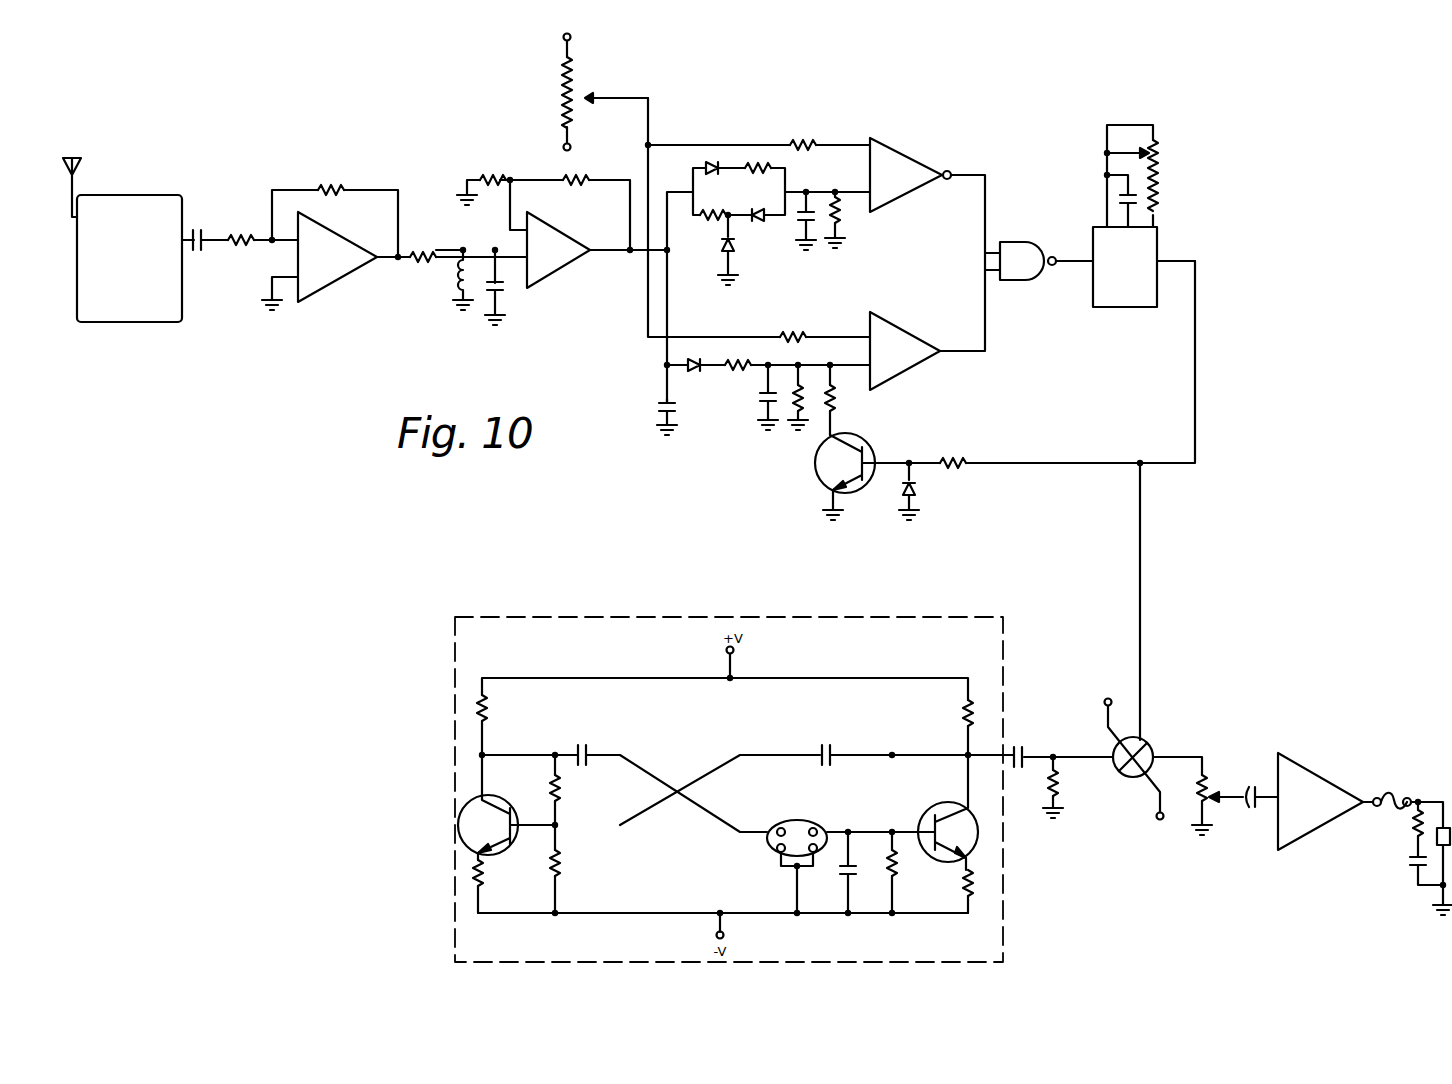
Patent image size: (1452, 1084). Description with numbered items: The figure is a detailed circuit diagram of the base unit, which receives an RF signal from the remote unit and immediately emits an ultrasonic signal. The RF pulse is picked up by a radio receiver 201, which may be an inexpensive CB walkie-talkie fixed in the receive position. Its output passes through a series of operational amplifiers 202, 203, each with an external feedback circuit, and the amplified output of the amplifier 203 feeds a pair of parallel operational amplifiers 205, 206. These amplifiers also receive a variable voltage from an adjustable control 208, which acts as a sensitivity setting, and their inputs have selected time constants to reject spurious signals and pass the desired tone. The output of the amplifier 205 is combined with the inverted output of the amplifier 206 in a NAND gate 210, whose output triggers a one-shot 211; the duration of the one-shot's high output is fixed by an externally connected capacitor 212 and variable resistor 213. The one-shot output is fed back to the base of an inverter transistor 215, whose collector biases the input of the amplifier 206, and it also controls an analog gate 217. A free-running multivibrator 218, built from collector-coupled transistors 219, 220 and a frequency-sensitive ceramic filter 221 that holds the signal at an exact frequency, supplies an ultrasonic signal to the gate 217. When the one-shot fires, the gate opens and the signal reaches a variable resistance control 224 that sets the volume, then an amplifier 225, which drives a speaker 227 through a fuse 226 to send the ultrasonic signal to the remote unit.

The radio receiver 201 is at (148, 322).
The operational amplifier 202 is at (333, 283).
The operational amplifier 203 is at (563, 267).
The operational amplifier 205 is at (900, 196).
The operational amplifier 206 is at (905, 370).
The adjustable control 208 is at (560, 96).
The NAND gate 210 is at (1030, 282).
The one-shot 211 is at (1125, 308).
The capacitor 212 is at (1122, 190).
The variable resistor 213 is at (1158, 162).
The inverter transistor 215 is at (855, 492).
The analog gate 217 is at (1147, 743).
The free-running multivibrator 218 is at (1008, 680).
The transistor 219 is at (500, 805).
The transistor 220 is at (932, 810).
The ceramic filter 221 is at (768, 850).
The variable resistance control 224 is at (1210, 785).
The amplifier 225 is at (1322, 775).
The fuse 226 is at (1410, 780).
The speaker 227 is at (1420, 845).